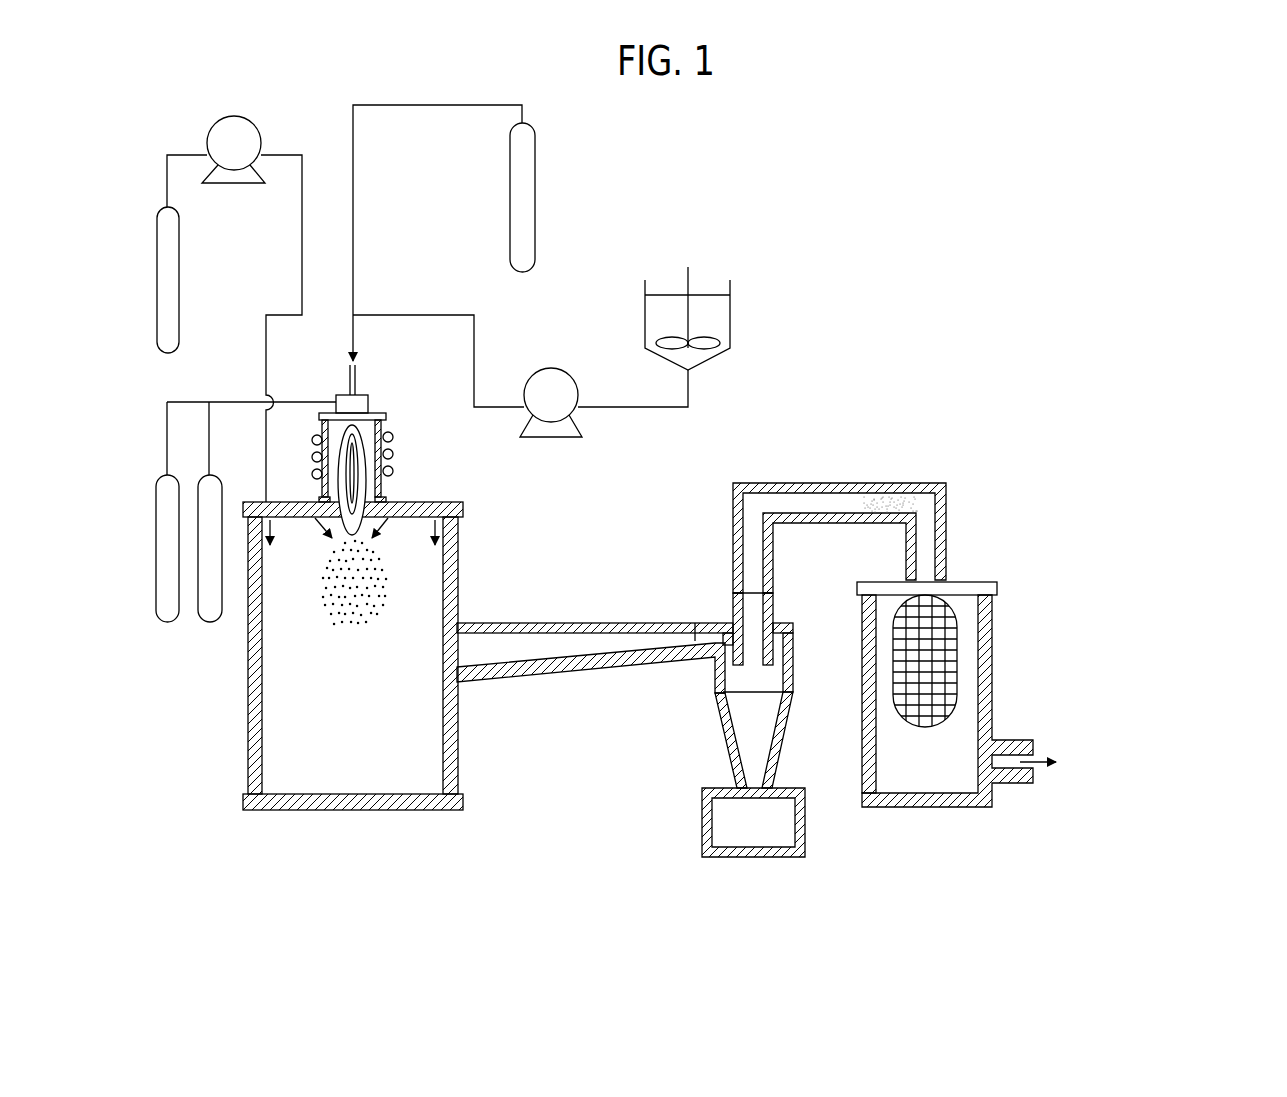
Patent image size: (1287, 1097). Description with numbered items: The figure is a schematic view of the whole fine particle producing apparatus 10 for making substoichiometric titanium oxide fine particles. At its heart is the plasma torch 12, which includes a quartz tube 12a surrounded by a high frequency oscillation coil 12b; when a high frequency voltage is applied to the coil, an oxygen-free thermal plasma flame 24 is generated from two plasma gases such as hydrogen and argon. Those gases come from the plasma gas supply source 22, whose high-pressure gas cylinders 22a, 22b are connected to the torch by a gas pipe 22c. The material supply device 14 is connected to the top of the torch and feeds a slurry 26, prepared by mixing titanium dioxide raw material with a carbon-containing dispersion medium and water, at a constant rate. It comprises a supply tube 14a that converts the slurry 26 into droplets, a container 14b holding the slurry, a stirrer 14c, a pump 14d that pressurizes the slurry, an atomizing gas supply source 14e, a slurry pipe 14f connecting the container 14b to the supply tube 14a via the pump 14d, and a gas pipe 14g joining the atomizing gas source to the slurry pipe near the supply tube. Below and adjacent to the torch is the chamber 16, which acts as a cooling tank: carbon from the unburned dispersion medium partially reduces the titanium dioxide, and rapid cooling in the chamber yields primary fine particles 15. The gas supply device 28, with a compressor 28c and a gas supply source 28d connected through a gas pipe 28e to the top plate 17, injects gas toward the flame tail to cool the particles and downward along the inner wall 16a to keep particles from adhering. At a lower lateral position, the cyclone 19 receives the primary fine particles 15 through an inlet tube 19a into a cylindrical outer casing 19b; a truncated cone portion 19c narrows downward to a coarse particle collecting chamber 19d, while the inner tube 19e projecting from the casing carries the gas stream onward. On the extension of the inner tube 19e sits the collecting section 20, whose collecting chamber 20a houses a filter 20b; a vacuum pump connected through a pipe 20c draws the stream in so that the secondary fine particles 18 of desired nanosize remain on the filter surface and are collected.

The fine particle producing apparatus 10 is at (940, 150).
The plasma torch 12 is at (368, 463).
The quartz tube 12a is at (382, 484).
The high frequency oscillation coil 12b is at (394, 453).
The material supply device 14 is at (560, 271).
The supply tube 14a is at (357, 377).
The container 14b is at (715, 332).
The stirrer 14c is at (723, 342).
The pump 14d is at (558, 370).
The atomizing gas supply source 14e is at (527, 187).
The slurry pipe 14f is at (415, 313).
The gas pipe 14g is at (355, 190).
The primary fine particles 15 is at (330, 593).
The chamber 16 is at (367, 634).
The inner wall 16a is at (262, 580).
The top plate 17 is at (457, 502).
The secondary fine particles 18 is at (893, 502).
The cyclone 19 is at (659, 710).
The inlet tube 19a is at (708, 638).
The outer casing 19b is at (770, 678).
The truncated cone portion 19c is at (765, 717).
The coarse particle collecting chamber 19d is at (787, 825).
The inner tube 19e is at (757, 605).
The collecting section 20 is at (1027, 680).
The collecting chamber 20a is at (892, 762).
The filter 20b is at (957, 667).
The pipe 20c is at (1007, 783).
The plasma gas supply source 22 is at (218, 516).
The high-pressure gas cylinder 22a is at (160, 548).
The high-pressure gas cylinder 22b is at (212, 613).
The gas pipe 22c is at (230, 402).
The thermal plasma flame 24 is at (347, 483).
The slurry 26 is at (723, 318).
The gas supply device 28 is at (223, 281).
The compressor 28c is at (234, 116).
The gas supply source 28d is at (173, 283).
The gas pipe 28e is at (275, 313).